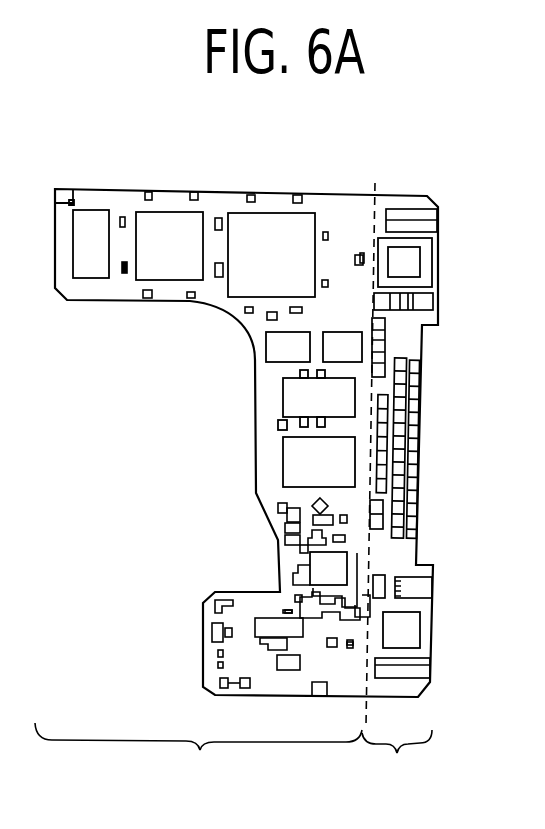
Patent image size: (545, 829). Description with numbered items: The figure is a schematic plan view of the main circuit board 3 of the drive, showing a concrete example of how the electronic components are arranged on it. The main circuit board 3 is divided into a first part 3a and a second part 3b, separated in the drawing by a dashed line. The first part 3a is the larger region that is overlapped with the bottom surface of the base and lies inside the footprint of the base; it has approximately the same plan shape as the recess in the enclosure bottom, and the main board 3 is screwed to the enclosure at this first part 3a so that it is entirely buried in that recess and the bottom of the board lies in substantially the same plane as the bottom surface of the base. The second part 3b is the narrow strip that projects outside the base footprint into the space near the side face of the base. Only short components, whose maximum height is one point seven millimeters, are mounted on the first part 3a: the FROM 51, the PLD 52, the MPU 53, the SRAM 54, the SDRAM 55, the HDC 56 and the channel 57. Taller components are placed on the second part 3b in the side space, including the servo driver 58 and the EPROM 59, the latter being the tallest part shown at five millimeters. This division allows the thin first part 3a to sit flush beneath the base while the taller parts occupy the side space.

The main circuit board 3 is at (336, 207).
The first part 3a is at (198, 759).
The second part 3b is at (397, 763).
The FROM 51 is at (90, 223).
The PLD 52 is at (168, 222).
The MPU 53 is at (268, 227).
The SRAM 54 is at (270, 350).
The SDRAM 55 is at (290, 397).
The HDC 56 is at (290, 460).
The channel 57 is at (317, 568).
The servo driver 58 is at (408, 632).
The EPROM 59 is at (407, 260).